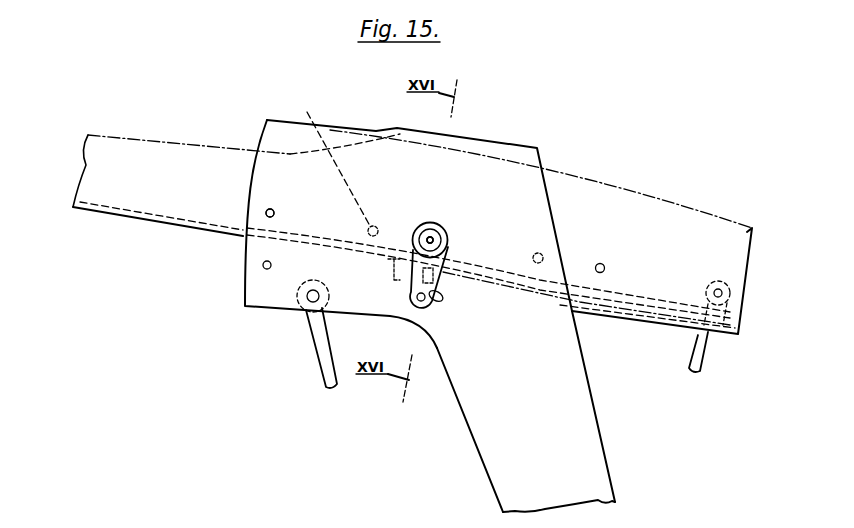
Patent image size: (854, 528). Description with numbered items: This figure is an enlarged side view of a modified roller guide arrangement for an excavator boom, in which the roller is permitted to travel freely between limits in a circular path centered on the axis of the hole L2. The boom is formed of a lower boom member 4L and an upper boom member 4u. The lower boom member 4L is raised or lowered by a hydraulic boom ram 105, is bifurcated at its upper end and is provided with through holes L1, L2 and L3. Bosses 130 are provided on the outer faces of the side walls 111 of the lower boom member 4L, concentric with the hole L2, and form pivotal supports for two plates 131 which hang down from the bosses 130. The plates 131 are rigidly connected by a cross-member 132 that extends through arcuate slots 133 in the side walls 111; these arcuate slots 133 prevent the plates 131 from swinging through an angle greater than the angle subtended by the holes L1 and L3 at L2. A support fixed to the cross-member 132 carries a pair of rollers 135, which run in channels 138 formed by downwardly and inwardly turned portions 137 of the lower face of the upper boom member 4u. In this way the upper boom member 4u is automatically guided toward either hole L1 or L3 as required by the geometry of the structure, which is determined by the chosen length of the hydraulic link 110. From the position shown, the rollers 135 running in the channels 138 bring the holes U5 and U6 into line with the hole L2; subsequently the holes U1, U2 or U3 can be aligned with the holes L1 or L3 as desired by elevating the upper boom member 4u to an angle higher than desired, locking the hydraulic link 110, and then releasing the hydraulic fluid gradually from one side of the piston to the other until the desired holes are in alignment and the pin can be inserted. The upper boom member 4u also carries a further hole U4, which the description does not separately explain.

The upper boom member 4u is at (588, 193).
The lower boom member 4L is at (587, 467).
The side walls 111 is at (397, 320).
The hydraulic boom ram 105 is at (322, 363).
The hydraulic link 110 is at (707, 343).
The bosses 130 is at (443, 233).
The plates 131 is at (412, 237).
The cross-member 132 is at (416, 298).
The arcuate slots 133 is at (442, 300).
The rollers 135 is at (446, 264).
The downwardly and inwardly turned portions 137 is at (598, 313).
The channels 138 is at (642, 312).
The through hole L1 is at (262, 268).
The through hole L2 is at (432, 232).
The through hole L3 is at (268, 209).
The hole U1 is at (273, 210).
The hole U2 is at (333, 166).
The hole U3 is at (544, 256).
The hole U4 is at (421, 225).
The hole U5 is at (604, 266).
The hole U6 is at (719, 289).